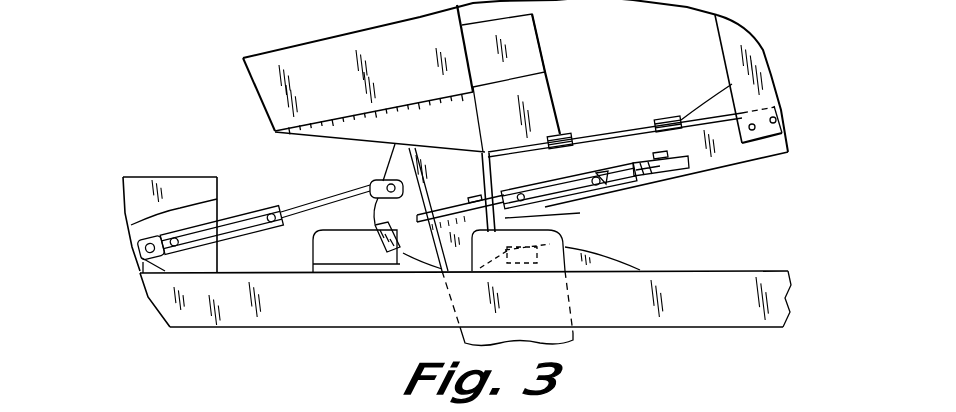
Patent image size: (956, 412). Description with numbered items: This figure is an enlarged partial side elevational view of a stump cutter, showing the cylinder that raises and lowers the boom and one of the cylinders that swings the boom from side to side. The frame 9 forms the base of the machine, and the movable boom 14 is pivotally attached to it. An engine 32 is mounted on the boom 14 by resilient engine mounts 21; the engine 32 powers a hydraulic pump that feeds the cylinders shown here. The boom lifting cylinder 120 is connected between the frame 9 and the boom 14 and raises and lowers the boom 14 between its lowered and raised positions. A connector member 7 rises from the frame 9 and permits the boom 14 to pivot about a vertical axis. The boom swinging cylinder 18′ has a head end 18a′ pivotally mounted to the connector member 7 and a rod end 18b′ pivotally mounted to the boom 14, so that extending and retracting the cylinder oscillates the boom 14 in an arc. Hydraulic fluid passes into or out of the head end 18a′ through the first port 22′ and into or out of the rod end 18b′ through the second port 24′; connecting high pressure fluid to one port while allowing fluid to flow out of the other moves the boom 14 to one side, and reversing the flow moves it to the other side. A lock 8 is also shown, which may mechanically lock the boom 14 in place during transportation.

The connector member 7 is at (563, 328).
The lock 8 is at (378, 253).
The frame 9 is at (296, 320).
The boom 14 is at (737, 153).
The boom swinging cylinder 18′ is at (577, 198).
The head end 18a′ is at (545, 213).
The rod end 18b′ is at (630, 184).
The resilient engine mounts 21 is at (563, 137).
The first port 22′ is at (586, 139).
The second port 24′ is at (600, 176).
The engine 32 is at (640, 52).
The boom lifting cylinder 120 is at (250, 210).